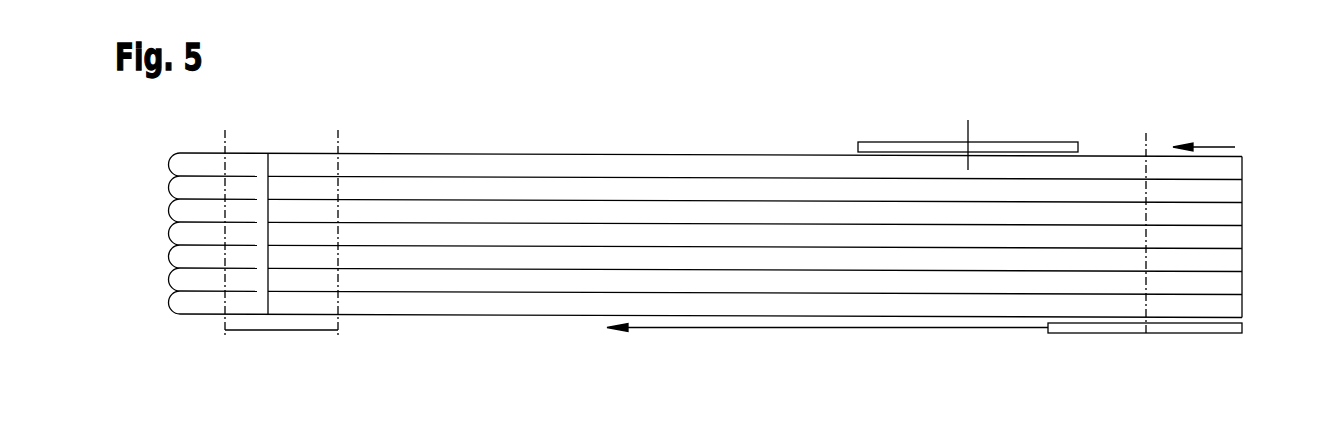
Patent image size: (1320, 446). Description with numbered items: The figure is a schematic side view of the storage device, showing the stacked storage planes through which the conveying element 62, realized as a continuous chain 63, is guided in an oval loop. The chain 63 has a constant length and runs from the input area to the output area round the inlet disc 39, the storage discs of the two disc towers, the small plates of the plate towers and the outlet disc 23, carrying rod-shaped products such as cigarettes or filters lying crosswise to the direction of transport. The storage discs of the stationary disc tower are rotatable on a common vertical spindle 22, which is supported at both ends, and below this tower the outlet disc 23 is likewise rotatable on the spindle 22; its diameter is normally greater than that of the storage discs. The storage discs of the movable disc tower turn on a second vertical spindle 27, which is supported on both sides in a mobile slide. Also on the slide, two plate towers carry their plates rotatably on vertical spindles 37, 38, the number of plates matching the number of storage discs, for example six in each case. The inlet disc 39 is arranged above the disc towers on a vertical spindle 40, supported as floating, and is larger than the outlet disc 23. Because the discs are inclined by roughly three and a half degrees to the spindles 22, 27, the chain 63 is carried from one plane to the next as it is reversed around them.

The spindle 22 is at (1147, 135).
The outlet disc 23 is at (1222, 329).
The spindle 27 is at (338, 132).
The spindle 37 is at (225, 132).
The spindle 38 is at (284, 207).
The inlet disc 39 is at (1050, 147).
The spindle 40 is at (970, 122).
The conveying element 62 is at (608, 154).
The chain 63 is at (706, 199).